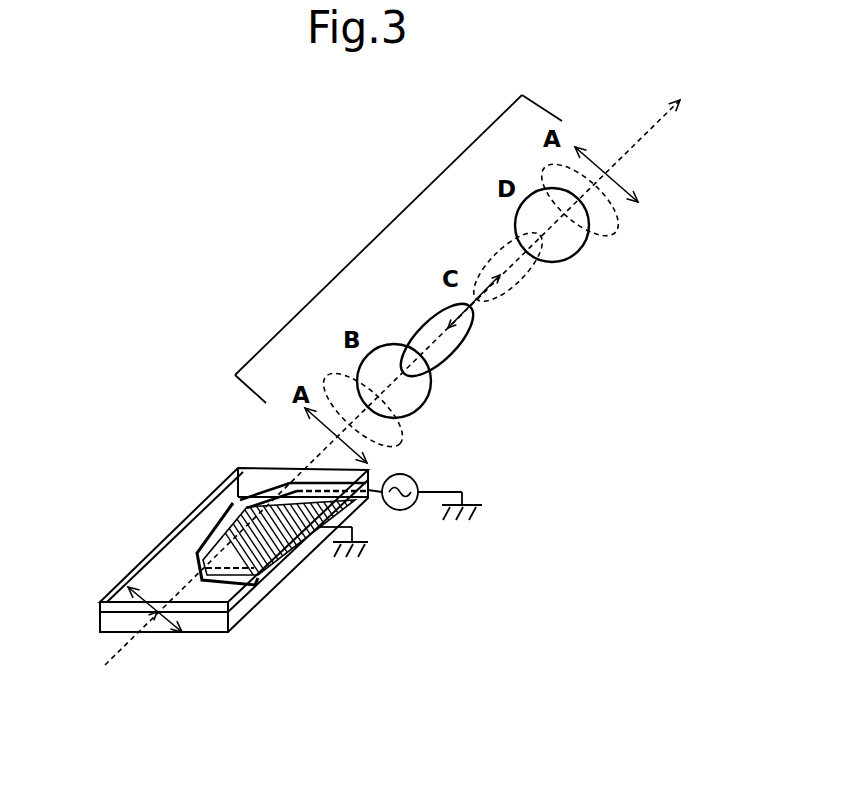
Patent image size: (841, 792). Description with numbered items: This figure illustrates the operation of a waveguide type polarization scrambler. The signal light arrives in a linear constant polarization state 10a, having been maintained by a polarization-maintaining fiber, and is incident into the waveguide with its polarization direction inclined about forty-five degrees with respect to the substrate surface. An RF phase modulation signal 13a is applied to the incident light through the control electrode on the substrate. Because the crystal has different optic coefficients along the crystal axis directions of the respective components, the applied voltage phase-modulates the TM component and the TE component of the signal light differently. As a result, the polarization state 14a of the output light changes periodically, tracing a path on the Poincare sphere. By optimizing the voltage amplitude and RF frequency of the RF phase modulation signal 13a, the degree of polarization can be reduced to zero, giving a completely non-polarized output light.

The linear constant polarization state 10a is at (163, 621).
The RF phase modulation signal V(t) 13a is at (443, 485).
The polarization state of the output light 14a is at (387, 226).